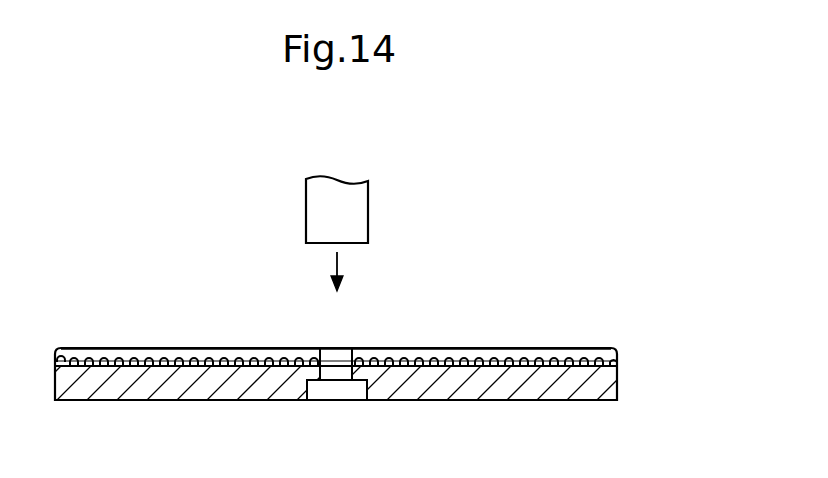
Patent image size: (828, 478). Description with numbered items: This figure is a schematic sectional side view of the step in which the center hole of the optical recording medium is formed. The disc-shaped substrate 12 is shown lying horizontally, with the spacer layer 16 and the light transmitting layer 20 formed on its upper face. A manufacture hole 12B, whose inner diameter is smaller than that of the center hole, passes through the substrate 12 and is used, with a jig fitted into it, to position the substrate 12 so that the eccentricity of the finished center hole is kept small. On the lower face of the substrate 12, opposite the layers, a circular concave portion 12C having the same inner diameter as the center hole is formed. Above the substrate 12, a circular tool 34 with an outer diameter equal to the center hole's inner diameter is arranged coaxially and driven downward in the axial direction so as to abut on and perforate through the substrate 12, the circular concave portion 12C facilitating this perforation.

The substrate 12 is at (620, 383).
The manufacture hole 12B is at (350, 372).
The circular concave portion 12C is at (357, 395).
The spacer layer 16 is at (617, 370).
The light transmitting layer 20 is at (617, 350).
The circular tool 34 is at (368, 205).